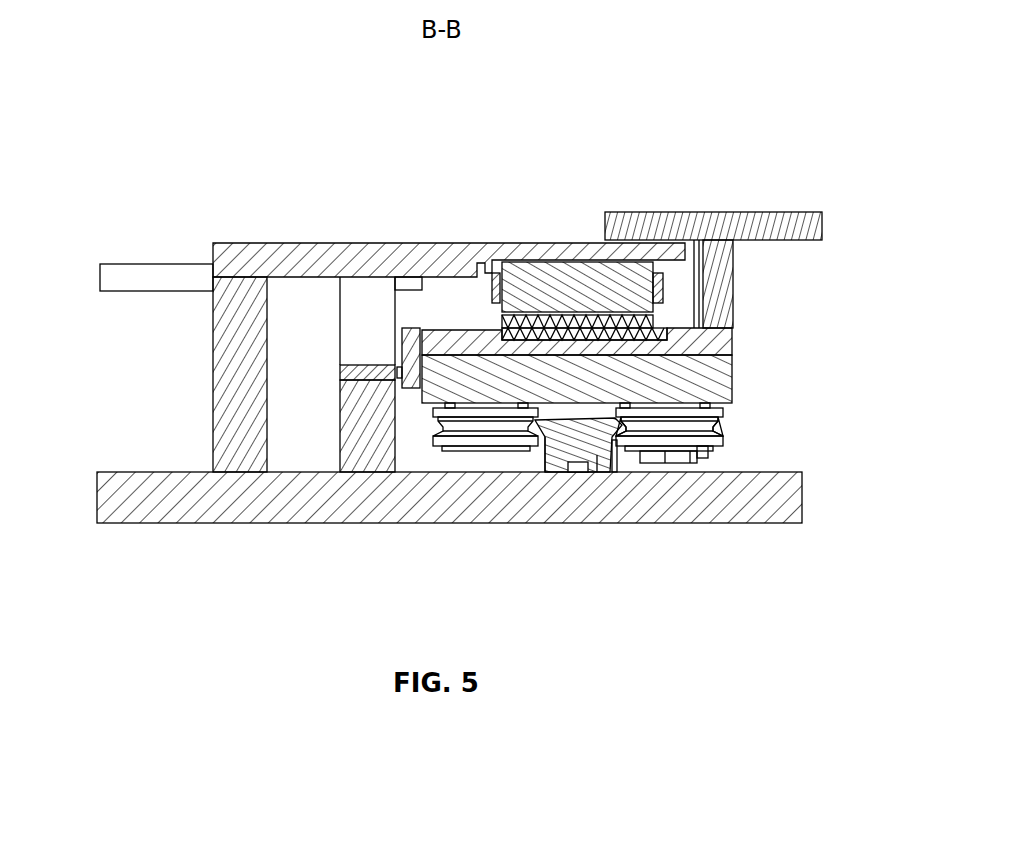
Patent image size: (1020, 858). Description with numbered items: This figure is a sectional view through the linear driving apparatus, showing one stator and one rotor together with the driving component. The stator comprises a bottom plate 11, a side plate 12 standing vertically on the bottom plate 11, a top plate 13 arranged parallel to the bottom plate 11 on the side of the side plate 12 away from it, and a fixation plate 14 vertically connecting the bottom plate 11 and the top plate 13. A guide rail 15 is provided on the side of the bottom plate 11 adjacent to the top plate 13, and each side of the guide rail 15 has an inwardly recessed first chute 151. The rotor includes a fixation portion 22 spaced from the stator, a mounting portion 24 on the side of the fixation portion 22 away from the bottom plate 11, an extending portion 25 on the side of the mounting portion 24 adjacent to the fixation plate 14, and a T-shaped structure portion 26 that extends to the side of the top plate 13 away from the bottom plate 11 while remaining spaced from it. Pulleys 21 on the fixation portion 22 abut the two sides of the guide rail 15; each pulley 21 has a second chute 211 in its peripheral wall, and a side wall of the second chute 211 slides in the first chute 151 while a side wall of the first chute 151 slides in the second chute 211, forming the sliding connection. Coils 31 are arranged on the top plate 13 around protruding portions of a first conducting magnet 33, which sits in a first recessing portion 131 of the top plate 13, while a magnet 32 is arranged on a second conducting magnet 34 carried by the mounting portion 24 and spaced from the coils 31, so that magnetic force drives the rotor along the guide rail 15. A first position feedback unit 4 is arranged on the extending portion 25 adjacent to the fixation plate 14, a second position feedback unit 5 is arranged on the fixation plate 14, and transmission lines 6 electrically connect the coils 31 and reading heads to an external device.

The first position feedback unit 4 is at (394, 366).
The second position feedback unit 5 is at (350, 375).
The transmission line 6 is at (158, 280).
The bottom plate 11 is at (323, 503).
The side plate 12 is at (242, 448).
The top plate 13 is at (297, 258).
The fixation plate 14 is at (357, 428).
The guide rail 15 is at (598, 458).
The first chute 151 is at (542, 445).
The pulley 21 is at (717, 443).
The second chute 211 is at (727, 430).
The fixation portion 22 is at (702, 382).
The mounting portion 24 is at (710, 345).
The extending portion 25 is at (412, 337).
The T-shaped structure portion 26 is at (717, 240).
The coil 31 is at (665, 290).
The magnet 32 is at (648, 318).
The first conducting magnet 33 is at (605, 290).
The second conducting magnet 34 is at (640, 332).
The first recessing portion 131 is at (485, 262).